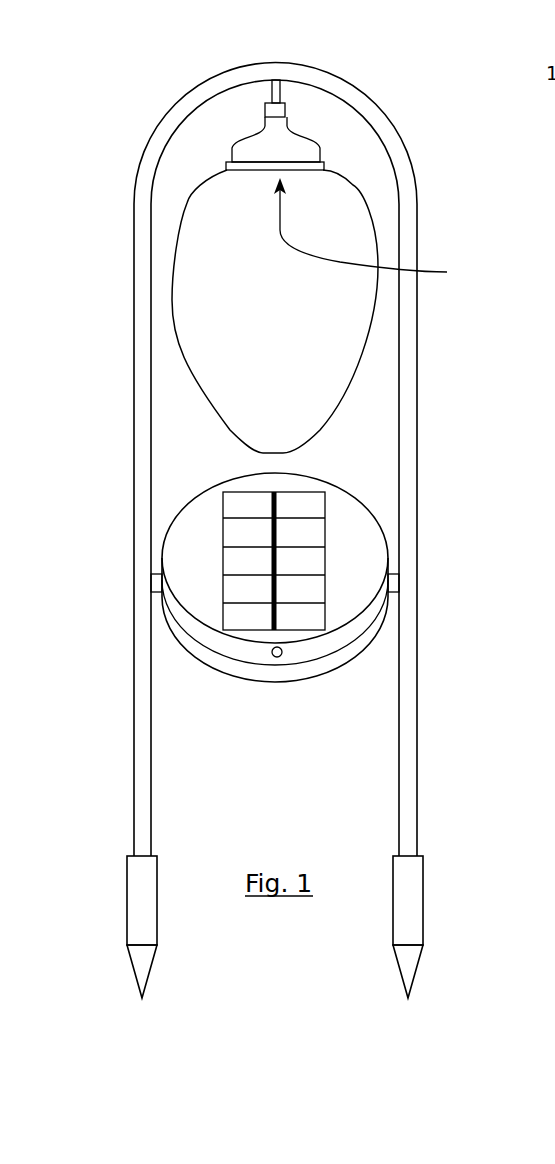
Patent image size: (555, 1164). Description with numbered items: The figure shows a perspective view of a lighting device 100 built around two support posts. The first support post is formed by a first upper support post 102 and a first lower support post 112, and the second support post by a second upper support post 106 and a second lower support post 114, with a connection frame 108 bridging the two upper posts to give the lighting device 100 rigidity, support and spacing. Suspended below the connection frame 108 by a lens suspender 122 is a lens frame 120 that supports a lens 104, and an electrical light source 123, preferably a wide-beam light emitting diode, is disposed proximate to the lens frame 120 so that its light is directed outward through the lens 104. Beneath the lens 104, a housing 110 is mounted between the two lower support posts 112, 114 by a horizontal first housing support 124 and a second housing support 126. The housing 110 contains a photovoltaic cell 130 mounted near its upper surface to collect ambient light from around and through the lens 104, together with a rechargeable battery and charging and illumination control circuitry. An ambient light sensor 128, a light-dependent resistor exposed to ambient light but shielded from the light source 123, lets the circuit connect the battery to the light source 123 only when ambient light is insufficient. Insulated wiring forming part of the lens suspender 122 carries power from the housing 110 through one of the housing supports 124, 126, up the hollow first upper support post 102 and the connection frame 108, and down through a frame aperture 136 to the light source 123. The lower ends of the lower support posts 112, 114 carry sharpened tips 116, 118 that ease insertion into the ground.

The lighting device 100 is at (110, 203).
The first upper support post 102 is at (138, 350).
The lens 104 is at (195, 235).
The second upper support post 106 is at (405, 343).
The connection frame 108 is at (238, 77).
The housing 110 is at (370, 540).
The first lower support post 112 is at (140, 758).
The second lower support post 114 is at (407, 742).
The sharpened tip 116 is at (133, 870).
The sharpened tip 118 is at (420, 928).
The lens frame 120 is at (242, 148).
The lens suspender 122 is at (299, 102).
The electrical light source 123 is at (379, 226).
The first housing support 124 is at (155, 583).
The second housing support 126 is at (399, 583).
The ambient light sensor 128 is at (277, 657).
The photovoltaic cell 130 is at (310, 510).
The frame aperture 136 is at (279, 96).